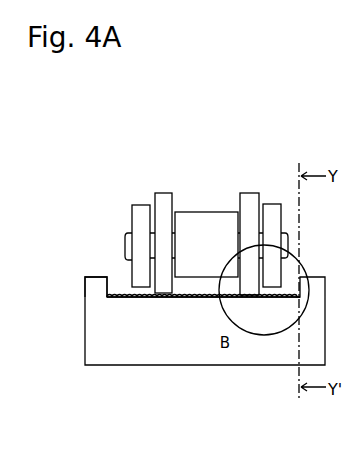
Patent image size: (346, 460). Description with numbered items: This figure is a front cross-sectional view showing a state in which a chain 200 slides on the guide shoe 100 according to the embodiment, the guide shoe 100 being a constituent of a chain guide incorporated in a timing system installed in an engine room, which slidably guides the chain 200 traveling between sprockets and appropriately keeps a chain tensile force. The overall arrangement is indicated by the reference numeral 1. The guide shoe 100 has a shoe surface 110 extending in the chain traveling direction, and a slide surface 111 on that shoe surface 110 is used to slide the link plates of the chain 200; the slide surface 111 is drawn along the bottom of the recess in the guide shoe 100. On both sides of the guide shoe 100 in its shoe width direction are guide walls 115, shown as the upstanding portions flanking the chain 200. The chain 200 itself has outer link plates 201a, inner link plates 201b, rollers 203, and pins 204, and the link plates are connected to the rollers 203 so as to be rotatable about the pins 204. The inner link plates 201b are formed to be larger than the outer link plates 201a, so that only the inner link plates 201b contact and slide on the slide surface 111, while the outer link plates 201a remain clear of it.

The semiconductor device 1 is at (186, 250).
The guide shoe 100 is at (131, 343).
The guide wall 115 is at (99, 287).
The slide surface 111 is at (127, 290).
The shoe surface 110 is at (163, 245).
The chain 200 is at (325, 115).
The pin 204 is at (133, 218).
The roller 203 is at (206, 225).
The inner link plate 201b is at (251, 202).
The outer link plate 201a is at (273, 210).